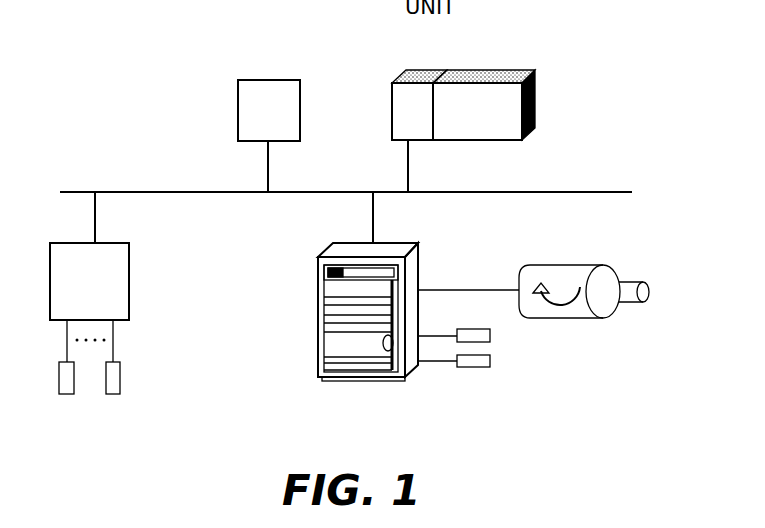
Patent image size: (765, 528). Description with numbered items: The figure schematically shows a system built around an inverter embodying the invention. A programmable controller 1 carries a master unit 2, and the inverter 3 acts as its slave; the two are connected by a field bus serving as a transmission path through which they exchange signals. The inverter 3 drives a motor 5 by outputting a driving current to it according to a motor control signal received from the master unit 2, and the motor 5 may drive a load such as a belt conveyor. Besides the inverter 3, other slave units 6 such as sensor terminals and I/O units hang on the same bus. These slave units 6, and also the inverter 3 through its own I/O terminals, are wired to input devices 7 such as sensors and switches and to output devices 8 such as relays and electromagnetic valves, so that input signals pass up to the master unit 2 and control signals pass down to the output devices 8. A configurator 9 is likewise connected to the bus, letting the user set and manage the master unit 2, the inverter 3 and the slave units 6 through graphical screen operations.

The programmable controller 1 is at (494, 73).
The master unit 2 is at (425, 73).
The inverter 3 is at (418, 265).
The motor 5 is at (576, 265).
The slave unit 6 is at (129, 271).
The input device 7 is at (67, 394).
The output device 8 is at (113, 394).
The configurator 9 is at (276, 80).